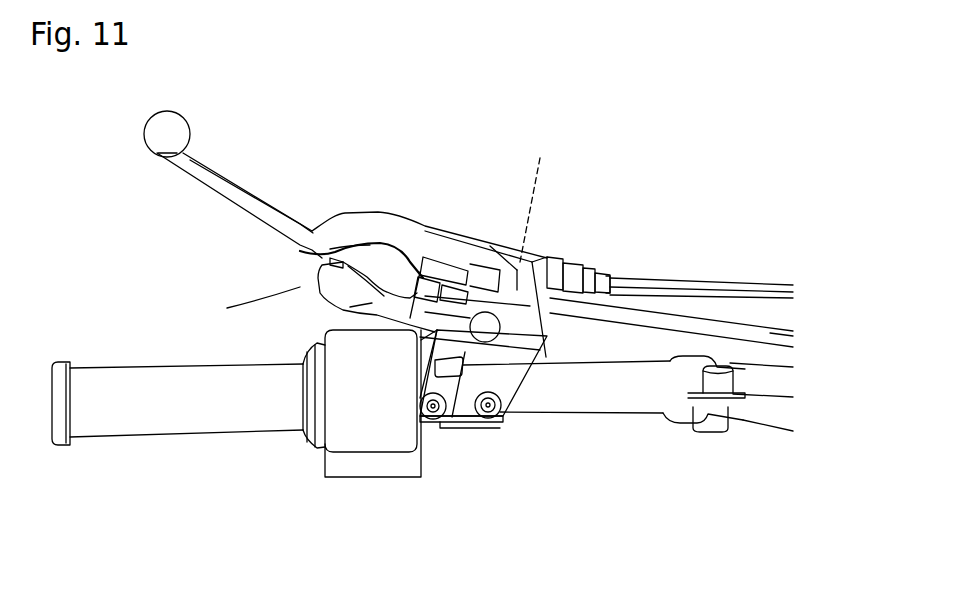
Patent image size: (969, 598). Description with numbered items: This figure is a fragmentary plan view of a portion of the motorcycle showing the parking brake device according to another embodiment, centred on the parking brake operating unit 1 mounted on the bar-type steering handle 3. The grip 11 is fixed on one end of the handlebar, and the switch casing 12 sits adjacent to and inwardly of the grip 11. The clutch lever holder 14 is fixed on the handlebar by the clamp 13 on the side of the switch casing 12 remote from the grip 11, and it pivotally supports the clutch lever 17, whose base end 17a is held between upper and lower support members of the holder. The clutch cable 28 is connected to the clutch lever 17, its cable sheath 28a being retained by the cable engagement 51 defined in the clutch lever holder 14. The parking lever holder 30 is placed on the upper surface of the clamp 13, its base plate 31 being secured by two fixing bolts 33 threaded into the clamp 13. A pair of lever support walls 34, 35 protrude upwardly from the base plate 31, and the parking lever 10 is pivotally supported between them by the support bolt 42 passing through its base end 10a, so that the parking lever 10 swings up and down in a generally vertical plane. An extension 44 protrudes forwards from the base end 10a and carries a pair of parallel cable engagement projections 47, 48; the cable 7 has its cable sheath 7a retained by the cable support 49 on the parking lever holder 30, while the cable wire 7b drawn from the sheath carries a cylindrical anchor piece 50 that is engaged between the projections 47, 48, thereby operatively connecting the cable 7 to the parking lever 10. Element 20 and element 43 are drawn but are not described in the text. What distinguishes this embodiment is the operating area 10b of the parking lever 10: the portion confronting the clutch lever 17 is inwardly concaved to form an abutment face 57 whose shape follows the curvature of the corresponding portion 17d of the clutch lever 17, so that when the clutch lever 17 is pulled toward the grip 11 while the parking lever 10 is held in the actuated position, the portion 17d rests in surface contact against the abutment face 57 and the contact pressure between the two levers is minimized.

The parking brake operating unit 1 is at (300, 287).
The bar-type steering handle 3 is at (655, 400).
The cable 7 is at (737, 317).
The cable sheath 7a is at (763, 337).
The cable wire 7b is at (487, 260).
The parking lever 10 is at (381, 329).
The base end of the parking lever 10a is at (380, 265).
The operating area of the parking lever 10b is at (345, 310).
The grip 11 is at (180, 427).
The switch casing 12 is at (340, 477).
The clamp 13 is at (427, 427).
The clutch lever holder 14 is at (533, 262).
The clutch lever 17 is at (245, 190).
The base end of the clutch lever 17a is at (540, 193).
The portion of the clutch lever 17d is at (330, 267).
The mounting plate 20 is at (450, 427).
The clutch cable 28 is at (683, 280).
The cable sheath of the clutch cable 28a is at (707, 293).
The parking lever holder 30 is at (533, 387).
The base plate 31 is at (443, 430).
The fixing bolts 33 is at (433, 420).
The lever support wall 34 is at (430, 333).
The lever support wall 35 is at (487, 300).
The support bolt 42 is at (440, 365).
The master cylinder 43 is at (533, 327).
The extension 44 is at (397, 260).
The cable engagement projection 47 is at (473, 270).
The cable engagement projection 48 is at (433, 257).
The cable support 49 is at (553, 283).
The cylindrical anchor piece 50 is at (457, 258).
The cable engagement 51 is at (607, 278).
The abutment face 57 is at (340, 250).